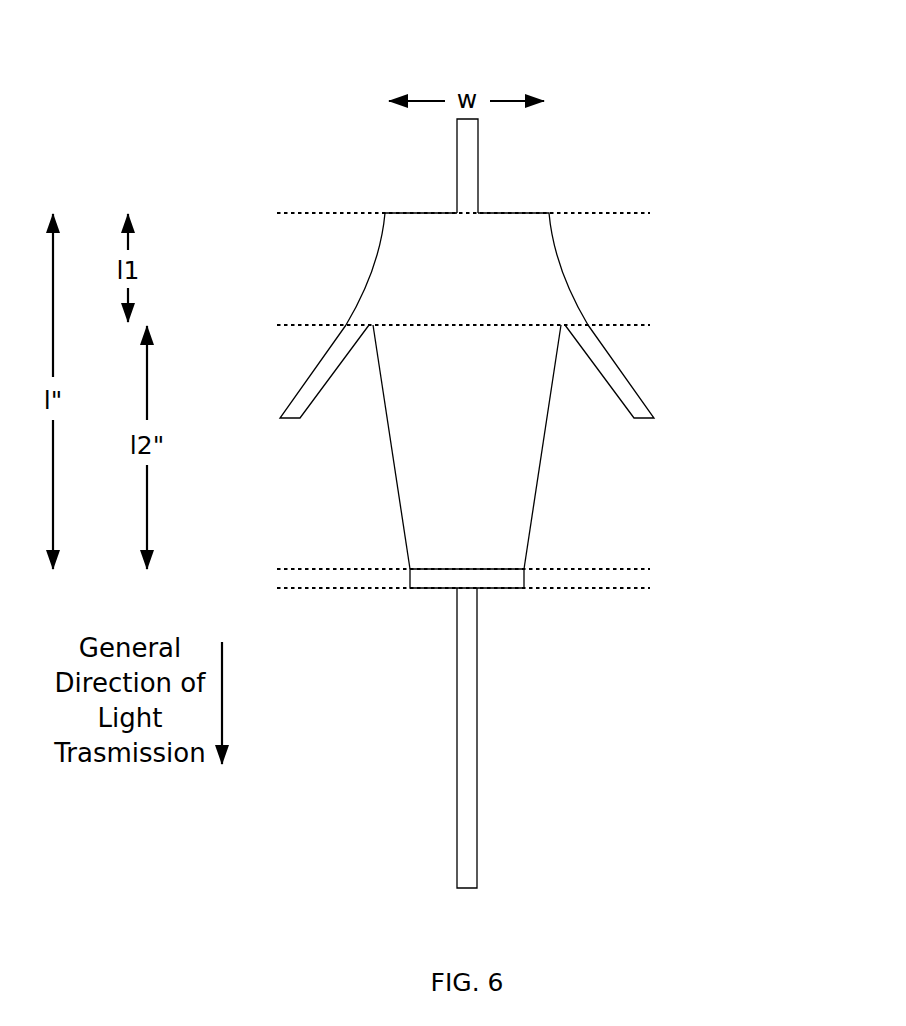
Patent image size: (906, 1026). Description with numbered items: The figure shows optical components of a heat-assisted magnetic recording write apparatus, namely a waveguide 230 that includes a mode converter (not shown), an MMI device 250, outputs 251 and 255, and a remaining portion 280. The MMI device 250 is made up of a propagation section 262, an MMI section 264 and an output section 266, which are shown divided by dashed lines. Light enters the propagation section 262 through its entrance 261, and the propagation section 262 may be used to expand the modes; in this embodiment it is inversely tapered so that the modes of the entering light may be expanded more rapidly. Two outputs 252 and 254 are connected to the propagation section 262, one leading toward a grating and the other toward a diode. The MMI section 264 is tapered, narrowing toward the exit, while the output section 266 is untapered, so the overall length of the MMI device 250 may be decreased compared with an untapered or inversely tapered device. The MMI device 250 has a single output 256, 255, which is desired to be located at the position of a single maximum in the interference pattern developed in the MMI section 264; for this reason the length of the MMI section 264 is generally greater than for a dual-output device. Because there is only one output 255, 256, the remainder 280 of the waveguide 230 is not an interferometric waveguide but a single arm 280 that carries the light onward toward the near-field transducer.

The waveguide 230 is at (442, 37).
The MMI device 250 is at (255, 309).
The output 251 is at (732, 382).
The output 252 is at (334, 345).
The output 254 is at (600, 343).
The output 255 is at (730, 606).
The output 256 is at (457, 605).
The entrance 261 is at (486, 194).
The propagation section 262 is at (467, 269).
The MMI section 264 is at (467, 447).
The output section 266 is at (524, 580).
The remaining portion 280 is at (525, 831).